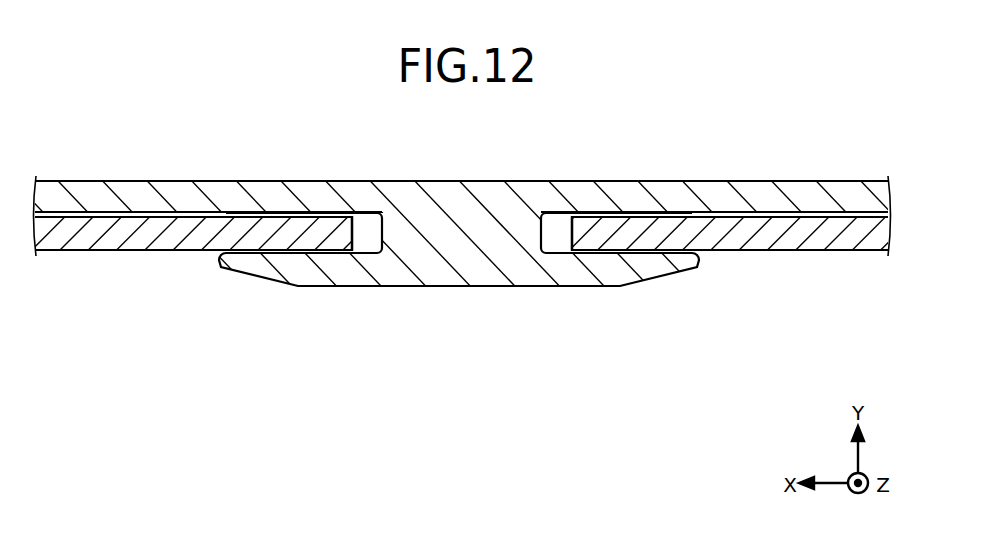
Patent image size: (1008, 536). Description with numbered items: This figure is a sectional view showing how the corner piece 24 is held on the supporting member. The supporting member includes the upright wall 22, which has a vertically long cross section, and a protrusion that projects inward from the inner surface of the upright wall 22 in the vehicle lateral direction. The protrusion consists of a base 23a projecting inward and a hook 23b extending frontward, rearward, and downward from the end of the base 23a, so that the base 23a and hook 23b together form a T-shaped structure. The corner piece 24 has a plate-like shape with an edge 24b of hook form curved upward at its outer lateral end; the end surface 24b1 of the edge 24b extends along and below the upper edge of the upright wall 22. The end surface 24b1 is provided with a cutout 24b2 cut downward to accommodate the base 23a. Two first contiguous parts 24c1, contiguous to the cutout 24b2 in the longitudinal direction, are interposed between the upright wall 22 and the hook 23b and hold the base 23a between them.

The upright wall 22 is at (268, 196).
The base 23a is at (445, 215).
The hook 23b is at (447, 262).
The corner piece 24 is at (864, 263).
The edge 24b is at (461, 285).
The end surface 24b1 is at (107, 238).
The cutout 24b2 is at (560, 222).
The first contiguous parts 24c1 is at (312, 236).